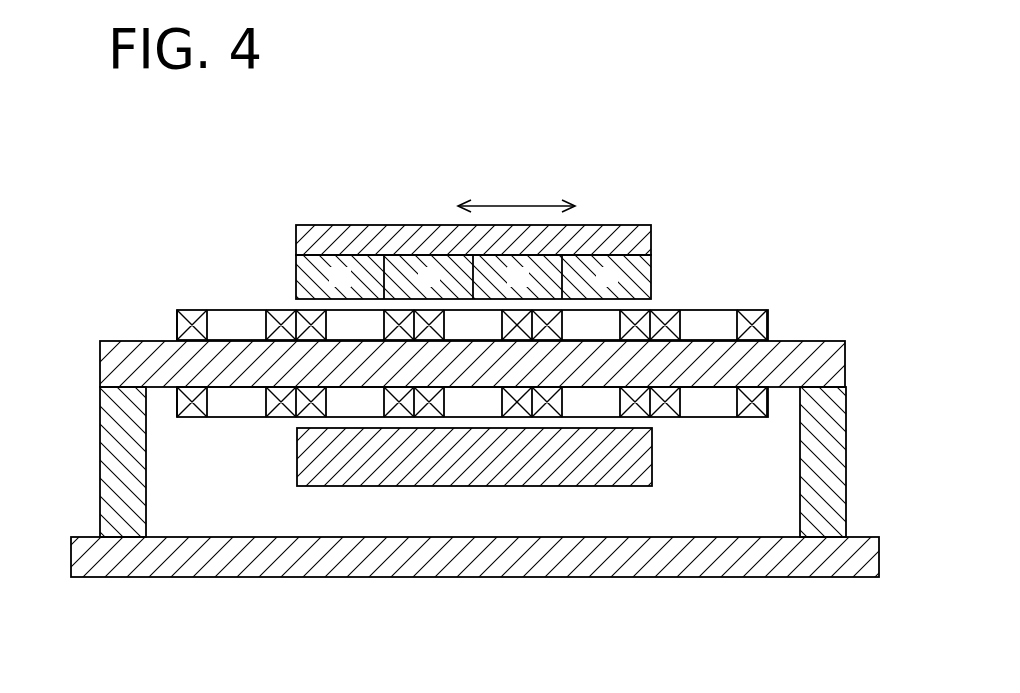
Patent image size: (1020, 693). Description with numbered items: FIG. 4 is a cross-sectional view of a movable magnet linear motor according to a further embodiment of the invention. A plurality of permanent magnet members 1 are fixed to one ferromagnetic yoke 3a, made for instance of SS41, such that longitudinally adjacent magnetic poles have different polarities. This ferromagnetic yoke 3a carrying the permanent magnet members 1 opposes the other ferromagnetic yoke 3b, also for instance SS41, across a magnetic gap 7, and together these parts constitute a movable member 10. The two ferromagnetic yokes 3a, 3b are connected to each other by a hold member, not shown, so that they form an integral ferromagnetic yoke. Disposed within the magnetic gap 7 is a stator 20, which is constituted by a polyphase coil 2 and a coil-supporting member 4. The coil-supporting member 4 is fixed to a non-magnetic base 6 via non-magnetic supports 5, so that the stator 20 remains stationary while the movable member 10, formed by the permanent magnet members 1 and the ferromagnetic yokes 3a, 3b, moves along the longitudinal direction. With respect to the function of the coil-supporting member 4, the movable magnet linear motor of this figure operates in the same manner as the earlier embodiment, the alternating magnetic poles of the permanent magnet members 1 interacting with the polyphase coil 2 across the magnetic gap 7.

The permanent magnet member 1 is at (652, 273).
The polyphase coil 2 is at (757, 312).
The ferromagnetic yoke 3a is at (632, 222).
The ferromagnetic yoke 3b is at (655, 462).
The coil-supporting member 4 is at (828, 340).
The non-magnetic support 5 is at (842, 448).
The non-magnetic base 6 is at (765, 577).
The magnetic gap 7 is at (322, 305).
The movable member 10 is at (312, 215).
The stator 20 is at (186, 302).